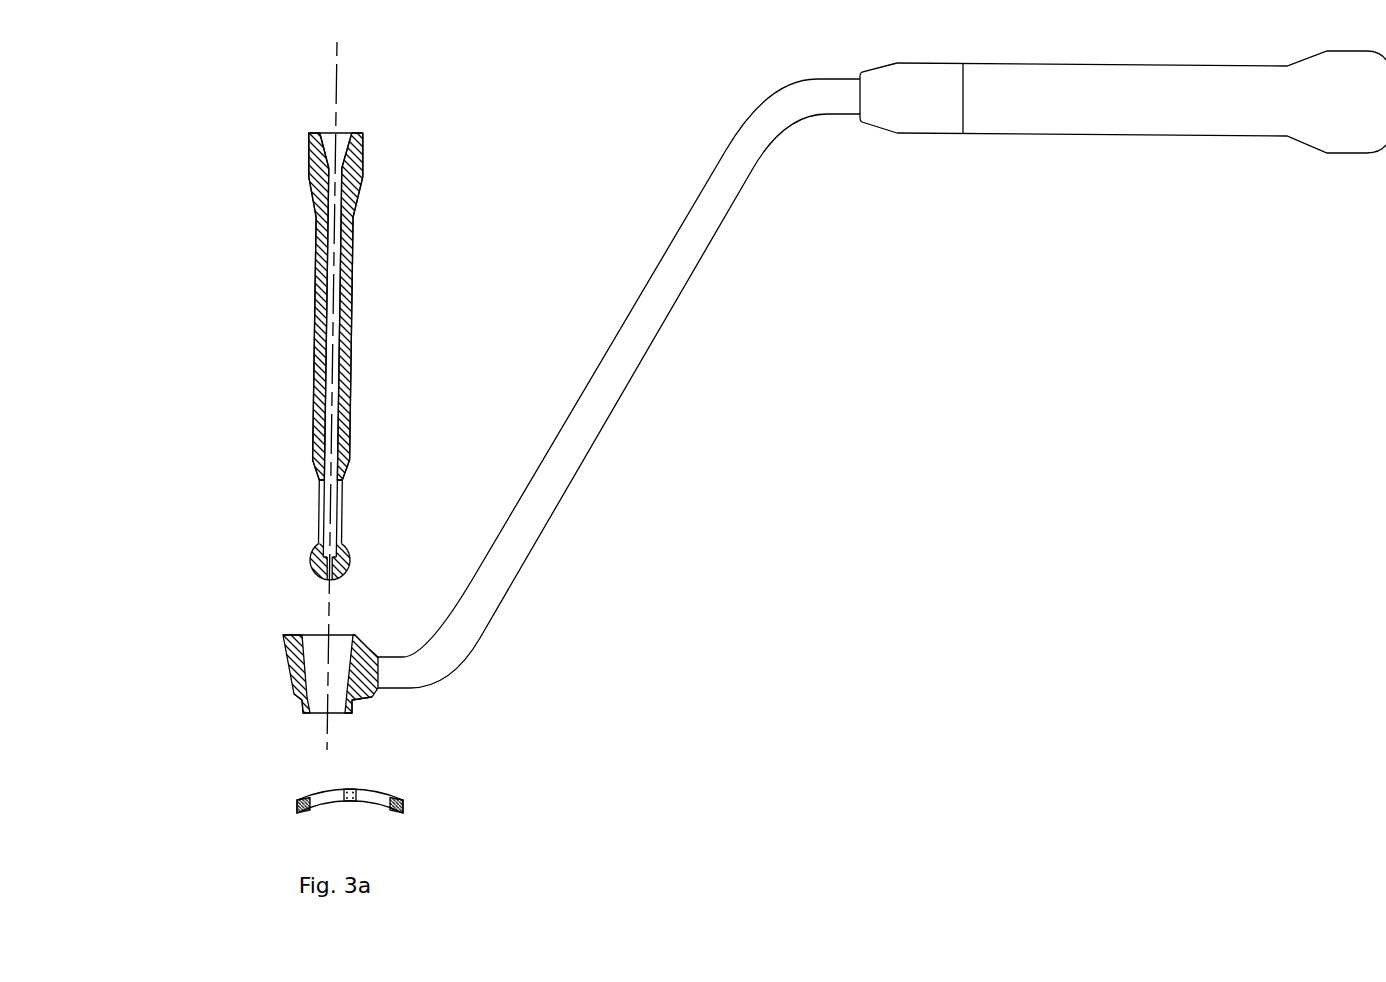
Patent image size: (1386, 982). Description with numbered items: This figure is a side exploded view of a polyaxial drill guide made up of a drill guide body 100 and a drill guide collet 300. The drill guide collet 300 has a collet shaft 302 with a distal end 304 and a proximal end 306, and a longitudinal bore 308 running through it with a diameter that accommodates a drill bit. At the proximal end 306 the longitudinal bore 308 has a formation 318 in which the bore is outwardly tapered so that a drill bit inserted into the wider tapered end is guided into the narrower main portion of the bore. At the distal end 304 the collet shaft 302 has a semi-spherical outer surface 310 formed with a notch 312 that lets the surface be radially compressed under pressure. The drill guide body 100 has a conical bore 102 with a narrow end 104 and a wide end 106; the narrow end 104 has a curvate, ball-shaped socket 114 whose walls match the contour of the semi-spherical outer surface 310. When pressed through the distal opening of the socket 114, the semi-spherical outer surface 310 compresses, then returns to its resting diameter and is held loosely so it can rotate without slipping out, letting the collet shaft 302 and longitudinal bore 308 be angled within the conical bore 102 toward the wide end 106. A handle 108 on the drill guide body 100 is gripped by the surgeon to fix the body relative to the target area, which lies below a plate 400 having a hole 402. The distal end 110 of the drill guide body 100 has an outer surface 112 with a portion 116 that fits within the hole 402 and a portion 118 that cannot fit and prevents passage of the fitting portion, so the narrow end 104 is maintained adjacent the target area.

The drill guide collet 300 is at (285, 381).
The collet shaft 302 is at (355, 332).
The distal end 304 is at (370, 543).
The proximal end 306 is at (375, 148).
The longitudinal bore 308 is at (330, 383).
The semi-spherical outer surface 310 is at (305, 558).
The notch 312 is at (263, 592).
The formation 318 is at (327, 147).
The drill guide body 100 is at (258, 662).
The conical bore 102 is at (310, 663).
The narrow end 104 is at (340, 730).
The wide end 106 is at (353, 628).
The handle 108 is at (930, 137).
The distal end 110 is at (283, 712).
The outer surface 112 is at (350, 707).
The socket 114 is at (355, 690).
The fitting portion 116 is at (303, 712).
The non-fitting portion 118 is at (288, 695).
The plate 400 is at (415, 800).
The hole 402 is at (313, 787).